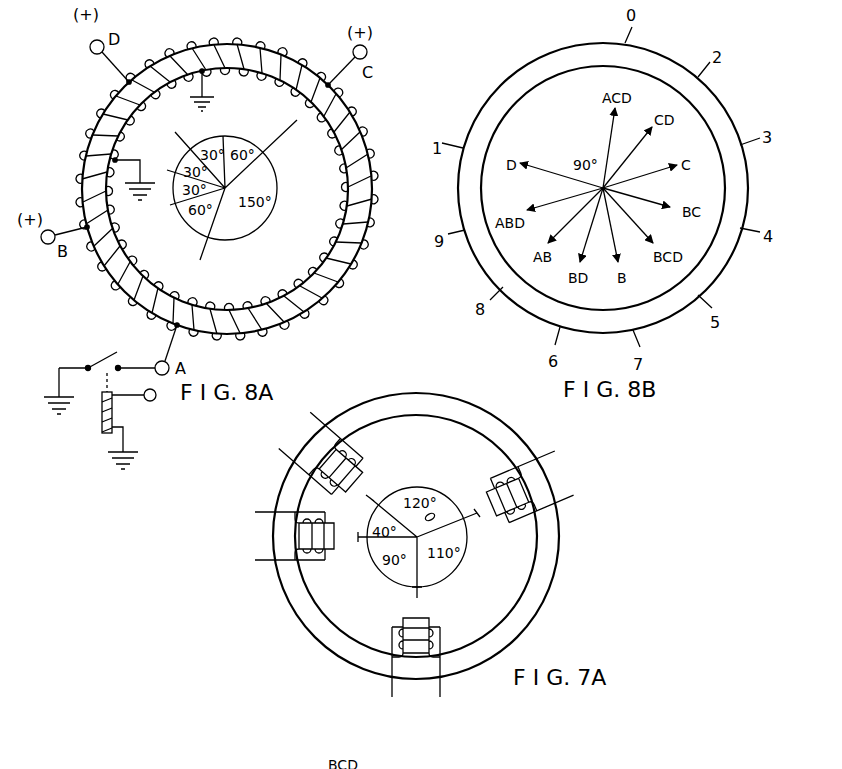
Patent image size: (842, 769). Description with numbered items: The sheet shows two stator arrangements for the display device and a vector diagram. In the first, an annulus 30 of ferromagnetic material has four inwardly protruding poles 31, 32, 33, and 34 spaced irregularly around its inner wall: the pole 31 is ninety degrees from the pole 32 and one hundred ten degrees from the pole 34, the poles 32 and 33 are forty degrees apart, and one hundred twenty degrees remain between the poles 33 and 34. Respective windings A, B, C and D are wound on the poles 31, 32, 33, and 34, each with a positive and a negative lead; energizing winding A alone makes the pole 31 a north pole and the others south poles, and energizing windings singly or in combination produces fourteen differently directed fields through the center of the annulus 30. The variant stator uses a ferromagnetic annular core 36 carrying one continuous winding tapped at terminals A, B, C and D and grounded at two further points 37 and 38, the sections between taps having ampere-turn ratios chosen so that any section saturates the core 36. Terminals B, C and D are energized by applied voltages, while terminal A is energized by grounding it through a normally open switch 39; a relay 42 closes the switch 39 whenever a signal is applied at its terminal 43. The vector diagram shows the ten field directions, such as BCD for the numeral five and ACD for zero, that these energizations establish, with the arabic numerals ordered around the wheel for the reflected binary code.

In FIG. 7A, the annulus 30 is at (555, 572).
In FIG. 7A, the pole 31 is at (430, 619).
In FIG. 7A, the pole 32 is at (337, 548).
In FIG. 7A, the pole 33 is at (362, 466).
In FIG. 7A, the pole 34 is at (494, 494).
In FIG. 8A, the ferromagnetic annular core 36 is at (253, 50).
In FIG. 8A, the grounded point 37 is at (203, 89).
In FIG. 8A, the grounded point 38 is at (120, 158).
In FIG. 8A, the normally open switch 39 is at (104, 356).
In FIG. 8A, the relay 42 is at (102, 418).
In FIG. 8A, the terminal 43 is at (151, 401).